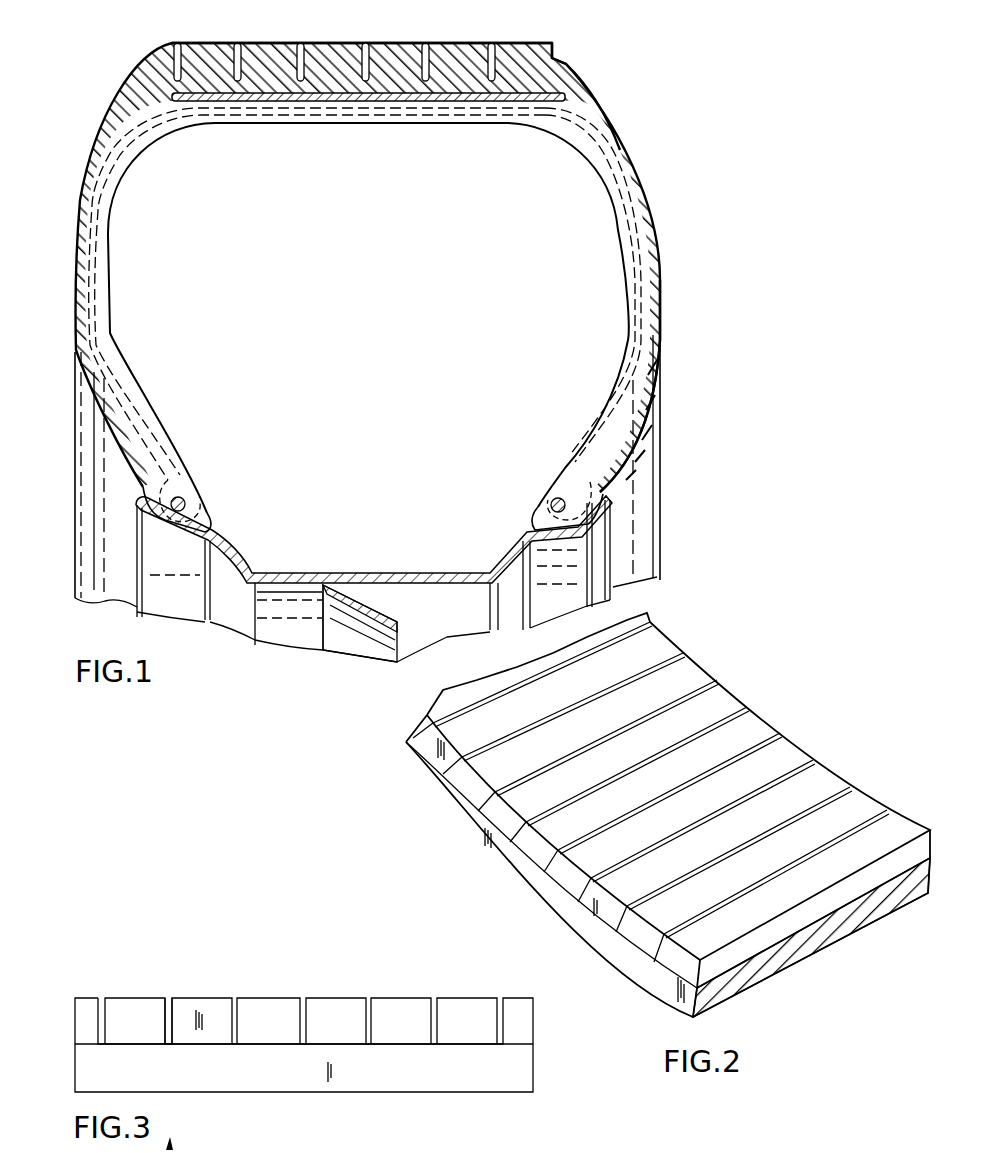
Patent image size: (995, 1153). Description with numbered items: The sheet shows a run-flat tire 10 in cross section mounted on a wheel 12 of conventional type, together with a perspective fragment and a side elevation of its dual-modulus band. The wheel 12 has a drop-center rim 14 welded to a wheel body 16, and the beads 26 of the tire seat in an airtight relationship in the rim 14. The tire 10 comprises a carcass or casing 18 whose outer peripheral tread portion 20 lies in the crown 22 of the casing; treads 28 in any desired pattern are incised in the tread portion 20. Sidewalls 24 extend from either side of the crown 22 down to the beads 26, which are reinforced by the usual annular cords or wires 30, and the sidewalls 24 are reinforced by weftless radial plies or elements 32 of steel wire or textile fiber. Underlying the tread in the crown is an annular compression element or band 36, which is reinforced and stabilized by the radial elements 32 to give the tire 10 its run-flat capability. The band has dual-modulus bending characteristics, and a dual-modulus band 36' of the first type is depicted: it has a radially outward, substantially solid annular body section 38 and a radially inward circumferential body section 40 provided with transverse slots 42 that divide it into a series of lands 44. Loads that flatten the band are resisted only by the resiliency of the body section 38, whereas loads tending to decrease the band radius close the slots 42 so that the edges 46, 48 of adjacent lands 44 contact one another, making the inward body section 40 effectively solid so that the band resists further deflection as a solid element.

In FIG. 1, the tire 10 is at (664, 222).
In FIG. 1, the wheel 12 is at (288, 565).
In FIG. 1, the drop-center rim 14 is at (613, 493).
In FIG. 1, the wheel body 16 is at (382, 617).
In FIG. 1, the carcass or casing 18 is at (668, 289).
In FIG. 1, the tread portion 20 is at (452, 40).
In FIG. 1, the crown 22 is at (580, 80).
In FIG. 1, the sidewalls 24 is at (645, 420).
In FIG. 1, the beads 26 is at (202, 520).
In FIG. 1, the treads 28 is at (367, 42).
In FIG. 1, the annular cords or wires 30 is at (552, 503).
In FIG. 1, the radial plies or elements 32 is at (614, 370).
In FIG. 1, the annular compression element or band 36 is at (368, 123).
In FIG. 2, the dual-modulus band 36' is at (668, 815).
In FIG. 3, the dual-modulus band 36' is at (286, 1031).
In FIG. 2, the annular body section 38 is at (663, 998).
In FIG. 3, the annular body section 38 is at (408, 1092).
In FIG. 2, the inward body section 40 is at (526, 848).
In FIG. 3, the inward body section 40 is at (262, 997).
In FIG. 2, the transverse slots 42 is at (558, 864).
In FIG. 3, the transverse slots 42 is at (368, 997).
In FIG. 2, the lands 44 is at (826, 772).
In FIG. 3, the lands 44 is at (450, 997).
In FIG. 3, the edge 46 is at (168, 1000).
In FIG. 3, the edge 48 is at (170, 1004).